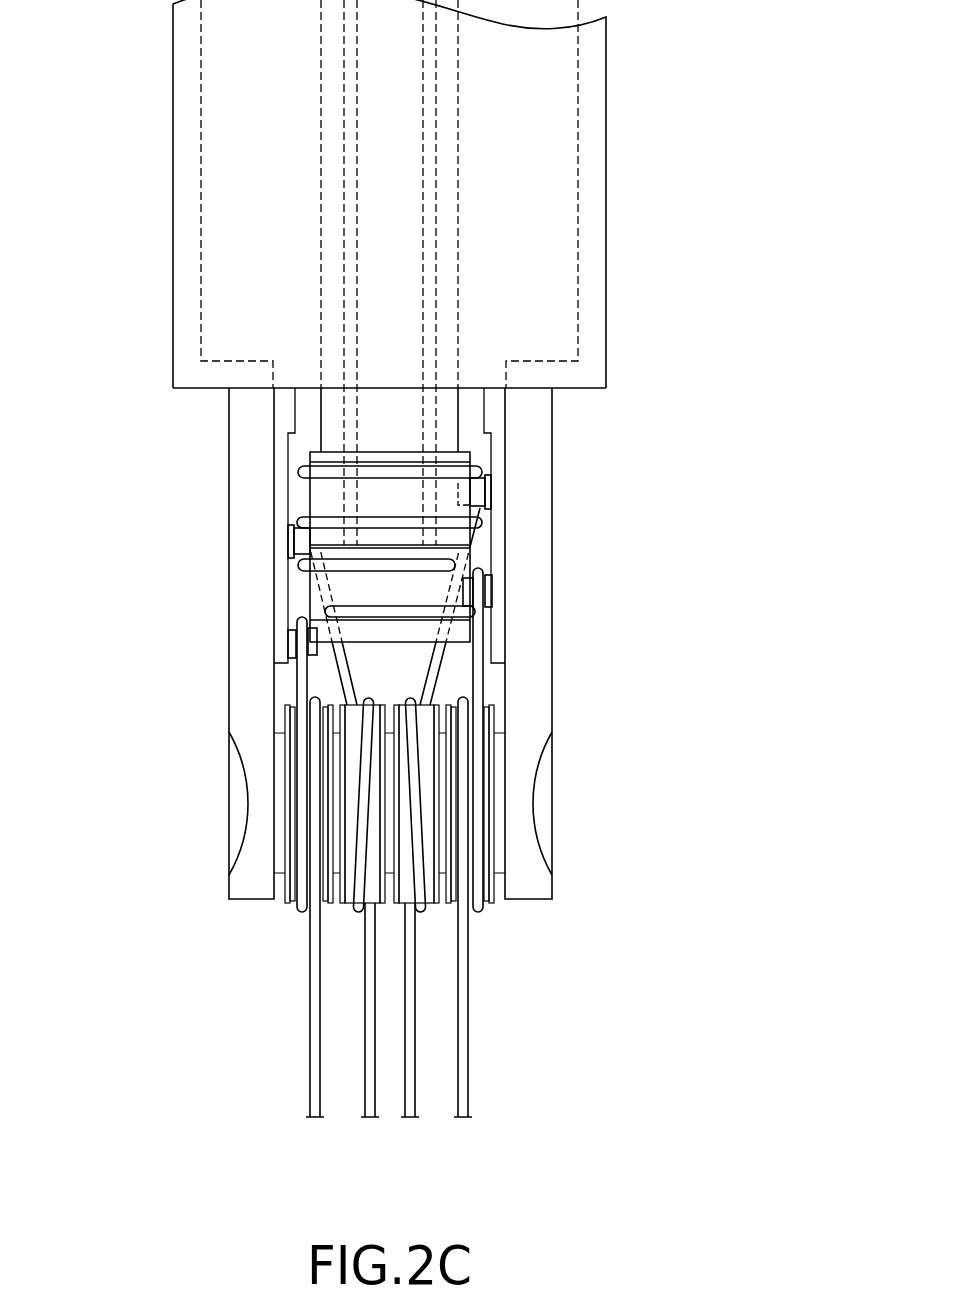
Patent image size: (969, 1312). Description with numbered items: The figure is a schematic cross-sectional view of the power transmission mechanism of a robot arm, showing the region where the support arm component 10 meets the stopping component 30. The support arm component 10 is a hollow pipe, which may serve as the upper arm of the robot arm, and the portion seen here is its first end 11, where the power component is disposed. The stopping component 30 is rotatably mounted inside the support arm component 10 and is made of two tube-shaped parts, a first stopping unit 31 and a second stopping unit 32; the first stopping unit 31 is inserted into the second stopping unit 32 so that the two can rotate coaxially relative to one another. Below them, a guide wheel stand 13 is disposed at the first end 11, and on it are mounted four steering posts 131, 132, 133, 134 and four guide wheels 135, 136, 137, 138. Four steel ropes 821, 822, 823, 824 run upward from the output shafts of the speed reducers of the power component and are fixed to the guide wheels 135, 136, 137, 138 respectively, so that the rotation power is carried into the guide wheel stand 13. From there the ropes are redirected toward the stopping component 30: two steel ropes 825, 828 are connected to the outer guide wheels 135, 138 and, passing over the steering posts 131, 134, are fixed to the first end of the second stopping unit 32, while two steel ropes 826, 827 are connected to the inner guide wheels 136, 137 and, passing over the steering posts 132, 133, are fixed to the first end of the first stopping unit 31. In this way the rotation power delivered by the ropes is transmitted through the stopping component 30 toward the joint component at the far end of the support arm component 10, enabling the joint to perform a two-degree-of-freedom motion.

The support arm component 10 is at (142, 192).
The first end 11 is at (186, 570).
The guide wheel stand 13 is at (532, 567).
The stopping component 30 is at (497, 225).
The first stopping unit 31 is at (460, 413).
The second stopping unit 32 is at (410, 588).
The steering post 131 is at (290, 645).
The steering post 132 is at (300, 542).
The steering post 133 is at (482, 495).
The steering post 134 is at (487, 590).
The guide wheel 135 is at (296, 905).
The guide wheel 136 is at (357, 908).
The guide wheel 137 is at (430, 908).
The guide wheel 138 is at (488, 908).
The steel rope 821 is at (315, 1088).
The steel rope 822 is at (465, 1090).
The steel rope 823 is at (410, 1090).
The steel rope 824 is at (370, 1086).
The steel rope 825 is at (303, 862).
The steel rope 826 is at (335, 672).
The steel rope 827 is at (445, 668).
The steel rope 828 is at (480, 687).